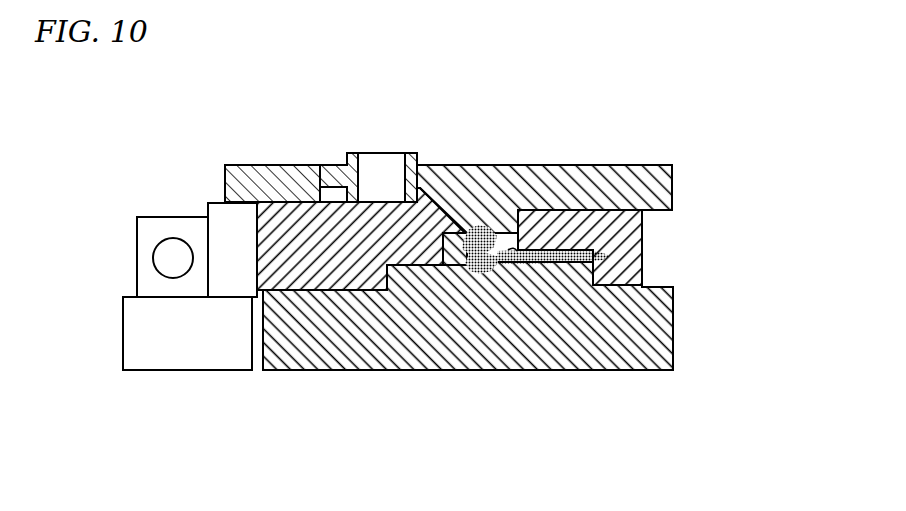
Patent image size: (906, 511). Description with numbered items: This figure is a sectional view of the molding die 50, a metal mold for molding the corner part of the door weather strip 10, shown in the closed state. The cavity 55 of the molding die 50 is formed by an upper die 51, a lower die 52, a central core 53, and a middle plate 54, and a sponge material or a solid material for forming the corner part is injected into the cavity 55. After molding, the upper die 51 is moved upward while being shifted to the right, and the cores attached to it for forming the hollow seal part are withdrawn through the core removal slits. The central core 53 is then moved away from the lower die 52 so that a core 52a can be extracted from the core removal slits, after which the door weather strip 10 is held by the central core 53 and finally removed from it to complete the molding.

The door weather strip 10 is at (493, 233).
The molding die 50 is at (700, 180).
The upper die 51 is at (597, 165).
The lower die 52 is at (577, 370).
The core 52a is at (468, 237).
The central core 53 is at (300, 237).
The middle plate 54 is at (642, 270).
The cavity 55 is at (508, 250).